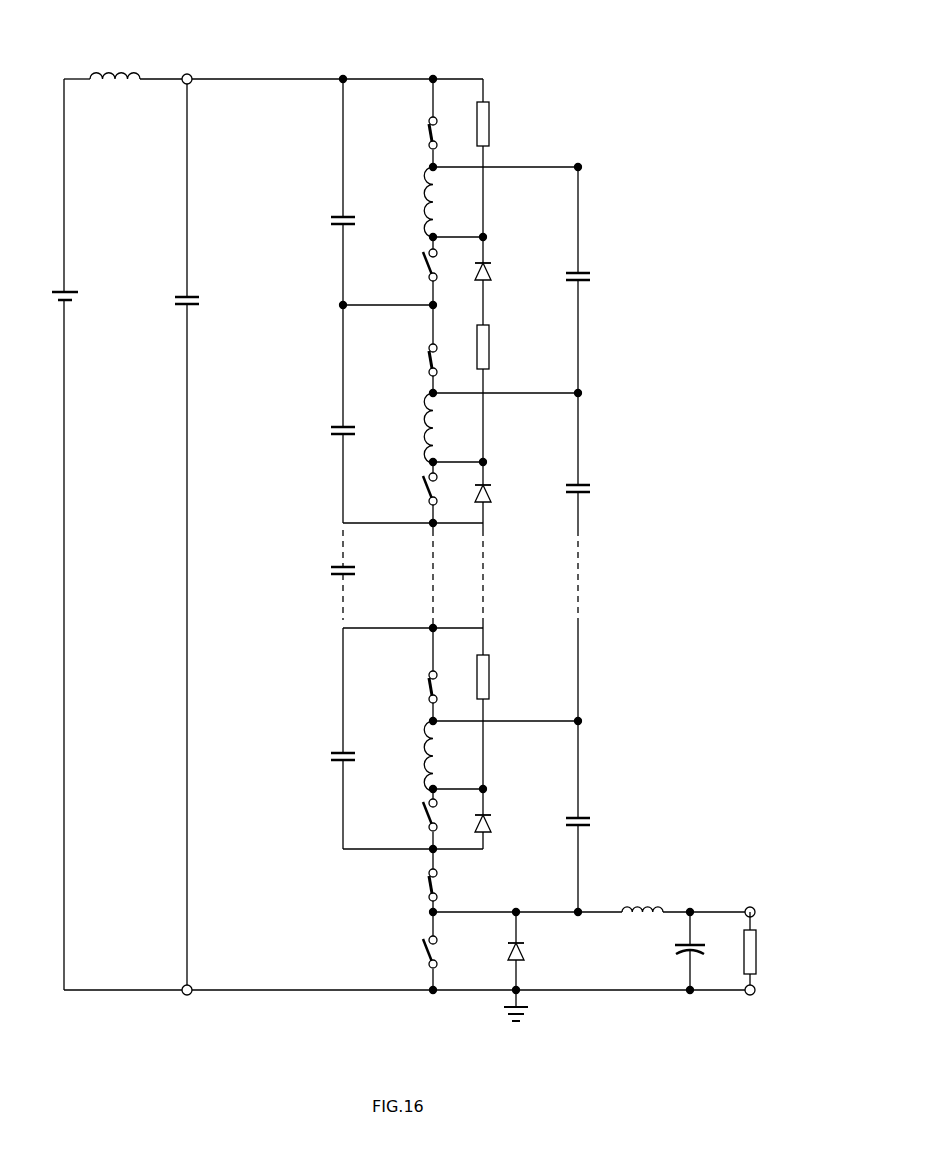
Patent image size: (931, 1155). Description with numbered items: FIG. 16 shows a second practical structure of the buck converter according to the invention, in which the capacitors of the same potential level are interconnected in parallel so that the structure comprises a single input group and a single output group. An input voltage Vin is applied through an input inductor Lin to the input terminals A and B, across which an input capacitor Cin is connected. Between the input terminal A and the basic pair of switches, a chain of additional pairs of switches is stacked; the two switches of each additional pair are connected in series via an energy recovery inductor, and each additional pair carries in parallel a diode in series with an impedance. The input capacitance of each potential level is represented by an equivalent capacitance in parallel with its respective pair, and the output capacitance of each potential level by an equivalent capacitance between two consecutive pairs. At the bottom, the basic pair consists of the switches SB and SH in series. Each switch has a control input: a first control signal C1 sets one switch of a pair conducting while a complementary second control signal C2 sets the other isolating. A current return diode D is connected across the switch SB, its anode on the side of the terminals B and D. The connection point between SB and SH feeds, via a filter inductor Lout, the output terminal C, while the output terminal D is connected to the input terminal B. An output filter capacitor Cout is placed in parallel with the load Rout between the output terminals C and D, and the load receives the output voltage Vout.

The input inductor Lin is at (117, 70).
The input terminal A is at (187, 71).
The input terminal B is at (192, 997).
The input voltage Vin is at (28, 256).
The input capacitor Cin is at (182, 308).
The switch SH is at (426, 886).
The switch SB is at (422, 955).
The first control signal C1 is at (452, 495).
The second control signal C2 is at (452, 595).
The current return diode / output terminal D is at (525, 950).
The filter inductor Lout is at (638, 906).
The output terminal C is at (751, 906).
The output filter capacitor Cout is at (684, 949).
The load Rout is at (744, 957).
The output voltage Vout is at (792, 950).